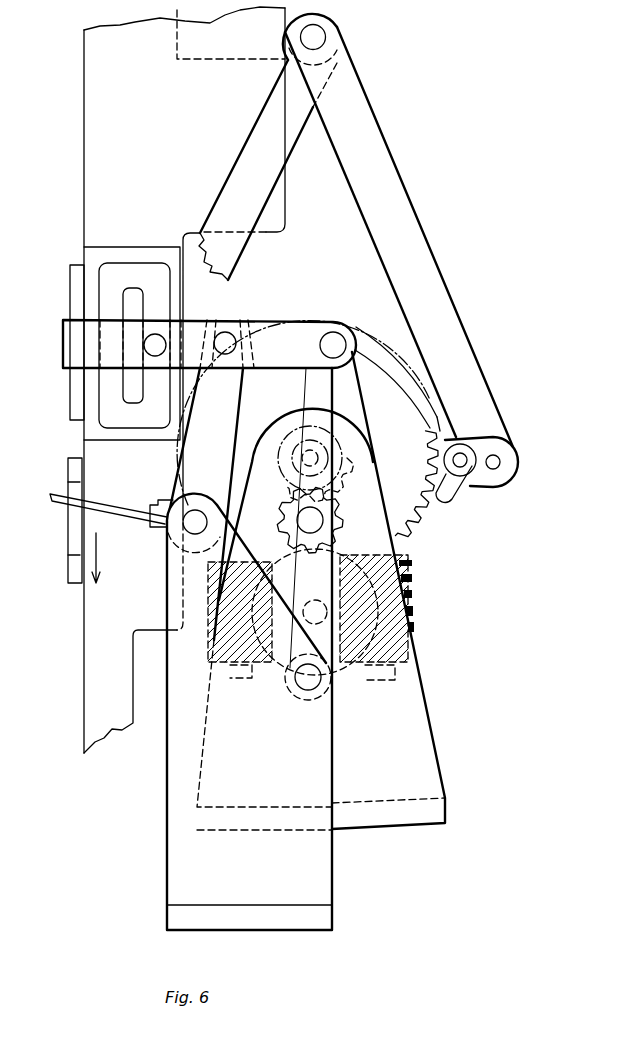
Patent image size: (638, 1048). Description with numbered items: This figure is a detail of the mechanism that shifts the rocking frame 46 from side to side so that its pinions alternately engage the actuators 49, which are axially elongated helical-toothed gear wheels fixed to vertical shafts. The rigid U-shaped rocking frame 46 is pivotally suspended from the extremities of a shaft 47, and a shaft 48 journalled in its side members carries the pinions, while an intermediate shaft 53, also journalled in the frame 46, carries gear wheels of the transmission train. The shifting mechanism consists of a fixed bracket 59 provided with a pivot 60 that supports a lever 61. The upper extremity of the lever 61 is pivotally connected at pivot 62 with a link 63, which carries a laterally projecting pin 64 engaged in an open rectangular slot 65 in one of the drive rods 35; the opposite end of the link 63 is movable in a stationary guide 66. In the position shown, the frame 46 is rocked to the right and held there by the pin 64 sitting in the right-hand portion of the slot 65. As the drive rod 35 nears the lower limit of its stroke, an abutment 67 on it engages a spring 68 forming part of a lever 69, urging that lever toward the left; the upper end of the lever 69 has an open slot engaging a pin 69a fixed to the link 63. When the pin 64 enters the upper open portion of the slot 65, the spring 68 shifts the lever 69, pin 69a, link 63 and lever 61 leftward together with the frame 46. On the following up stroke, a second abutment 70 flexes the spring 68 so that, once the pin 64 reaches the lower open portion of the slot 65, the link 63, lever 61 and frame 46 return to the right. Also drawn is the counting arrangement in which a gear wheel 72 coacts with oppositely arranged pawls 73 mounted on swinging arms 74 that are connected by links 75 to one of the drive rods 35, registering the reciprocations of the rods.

The drive rod 35 is at (160, 143).
The links 75 is at (242, 157).
The swinging arms 74 is at (503, 450).
The pawls 73 is at (453, 497).
The rectangular slot 65 is at (127, 275).
The stationary guide 66 is at (70, 410).
The link 63 is at (287, 318).
The pin 64 is at (160, 336).
The pin 69a is at (230, 333).
The pivot 62 is at (330, 326).
The lever 61 is at (351, 395).
The gear wheel 72 is at (430, 512).
The rocking frame 46 is at (422, 731).
The fixed bracket 59 is at (202, 708).
The lever 69 is at (253, 330).
The spring 68 is at (120, 508).
The abutment 67 is at (70, 464).
The second abutment 70 is at (70, 574).
The shaft 47 is at (302, 458).
The intermediate shaft 53 is at (283, 528).
The shaft 48 is at (315, 600).
The pivot 60 is at (305, 689).
The actuators 49 is at (410, 577).